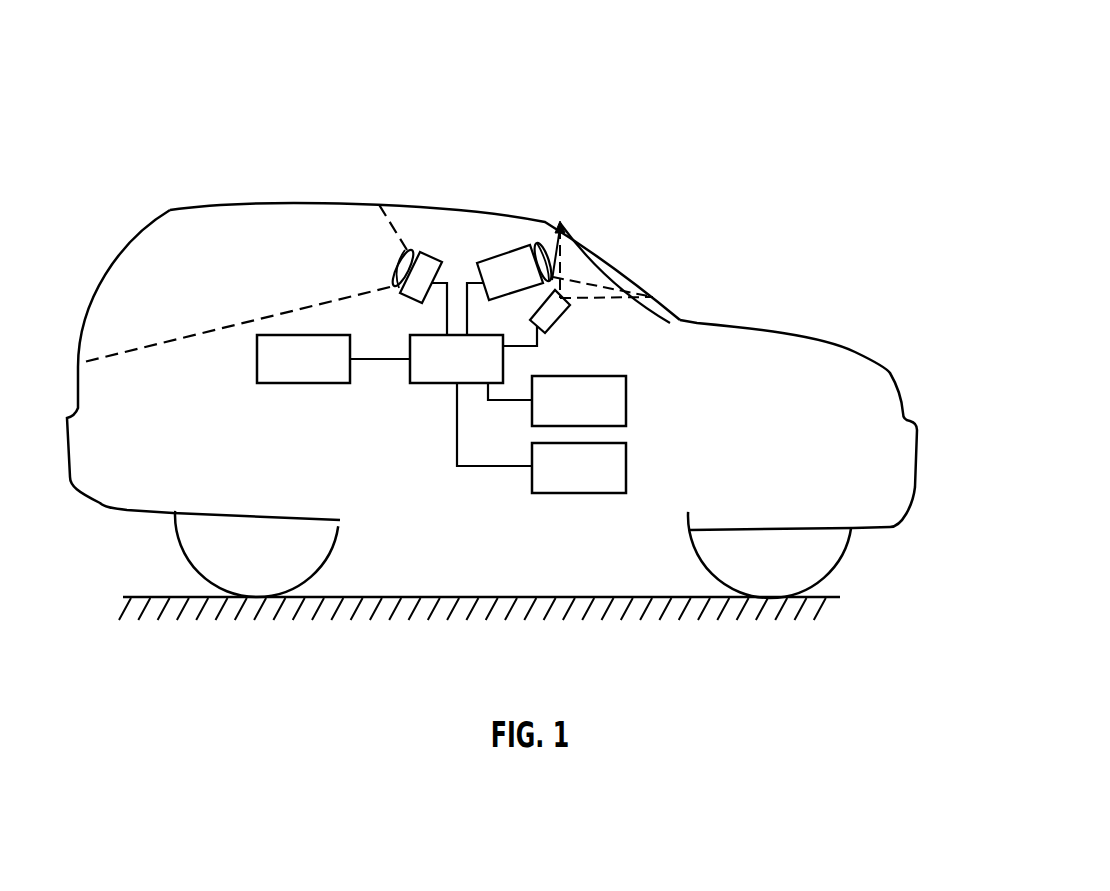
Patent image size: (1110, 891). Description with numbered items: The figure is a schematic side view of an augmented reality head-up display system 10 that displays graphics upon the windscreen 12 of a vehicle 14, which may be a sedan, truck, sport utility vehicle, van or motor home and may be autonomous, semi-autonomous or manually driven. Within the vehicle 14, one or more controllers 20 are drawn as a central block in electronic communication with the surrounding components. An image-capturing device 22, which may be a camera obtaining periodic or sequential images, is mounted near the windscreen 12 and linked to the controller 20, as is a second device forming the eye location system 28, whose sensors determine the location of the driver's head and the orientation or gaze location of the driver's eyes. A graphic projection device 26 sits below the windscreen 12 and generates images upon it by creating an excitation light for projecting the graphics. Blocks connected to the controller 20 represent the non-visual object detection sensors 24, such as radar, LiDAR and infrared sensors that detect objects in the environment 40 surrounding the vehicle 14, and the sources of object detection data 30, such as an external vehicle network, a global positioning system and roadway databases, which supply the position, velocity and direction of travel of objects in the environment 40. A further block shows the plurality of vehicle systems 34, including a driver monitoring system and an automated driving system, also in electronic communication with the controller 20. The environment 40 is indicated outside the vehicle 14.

The augmented reality head-up display system 10 is at (617, 214).
The windscreen 12 is at (615, 267).
The vehicle 14 is at (890, 372).
The controller 20 is at (442, 373).
The image-capturing device 22 is at (505, 268).
The non-visual object detection sensor 24 is at (564, 415).
The graphic projection device 26 is at (553, 313).
The eye location system 28 is at (423, 267).
The source of object detection data 30 is at (564, 482).
The vehicle systems 34 is at (288, 373).
The environment 40 is at (867, 61).